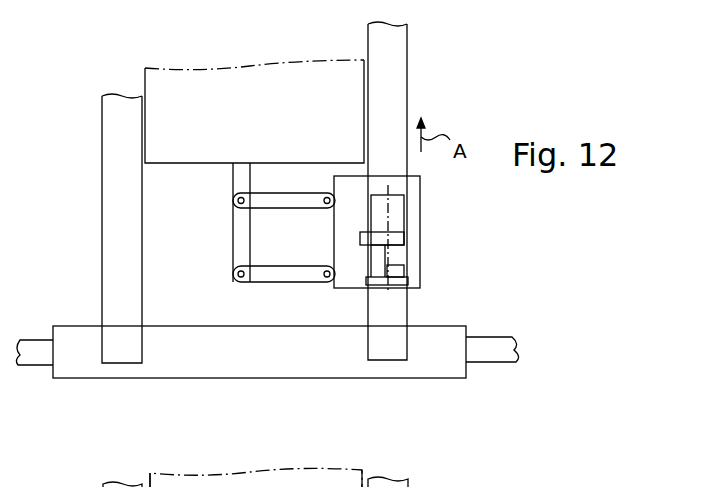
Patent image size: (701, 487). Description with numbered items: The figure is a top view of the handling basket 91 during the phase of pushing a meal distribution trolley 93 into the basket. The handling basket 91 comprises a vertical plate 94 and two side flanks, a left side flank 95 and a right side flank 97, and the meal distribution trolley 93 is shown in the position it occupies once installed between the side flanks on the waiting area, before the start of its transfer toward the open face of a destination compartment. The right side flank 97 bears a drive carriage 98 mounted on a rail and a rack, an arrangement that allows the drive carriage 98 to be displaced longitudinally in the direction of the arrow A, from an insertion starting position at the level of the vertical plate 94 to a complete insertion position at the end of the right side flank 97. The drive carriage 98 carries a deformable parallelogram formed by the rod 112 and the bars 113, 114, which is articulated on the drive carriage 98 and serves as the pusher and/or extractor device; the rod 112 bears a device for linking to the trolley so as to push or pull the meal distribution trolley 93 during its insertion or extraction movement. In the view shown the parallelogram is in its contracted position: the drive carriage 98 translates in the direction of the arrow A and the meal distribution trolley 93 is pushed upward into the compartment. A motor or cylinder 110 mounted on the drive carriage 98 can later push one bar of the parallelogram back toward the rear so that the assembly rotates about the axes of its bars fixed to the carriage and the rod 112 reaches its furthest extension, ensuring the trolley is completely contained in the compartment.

The handling basket 91 is at (477, 91).
The meal distribution trolley 93 is at (270, 124).
The vertical plate 94 is at (503, 347).
The left side flank 95 is at (110, 160).
The right side flank 97 is at (397, 62).
The drive carriage 98 is at (414, 197).
The motor or cylinder 110 is at (398, 220).
The rod 112 is at (240, 181).
The bar of the deformable parallelogram 113 is at (272, 200).
The bar of the deformable parallelogram 114 is at (273, 275).